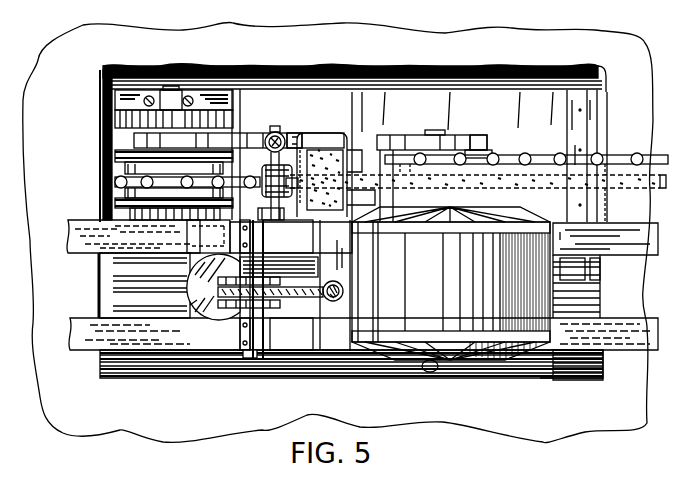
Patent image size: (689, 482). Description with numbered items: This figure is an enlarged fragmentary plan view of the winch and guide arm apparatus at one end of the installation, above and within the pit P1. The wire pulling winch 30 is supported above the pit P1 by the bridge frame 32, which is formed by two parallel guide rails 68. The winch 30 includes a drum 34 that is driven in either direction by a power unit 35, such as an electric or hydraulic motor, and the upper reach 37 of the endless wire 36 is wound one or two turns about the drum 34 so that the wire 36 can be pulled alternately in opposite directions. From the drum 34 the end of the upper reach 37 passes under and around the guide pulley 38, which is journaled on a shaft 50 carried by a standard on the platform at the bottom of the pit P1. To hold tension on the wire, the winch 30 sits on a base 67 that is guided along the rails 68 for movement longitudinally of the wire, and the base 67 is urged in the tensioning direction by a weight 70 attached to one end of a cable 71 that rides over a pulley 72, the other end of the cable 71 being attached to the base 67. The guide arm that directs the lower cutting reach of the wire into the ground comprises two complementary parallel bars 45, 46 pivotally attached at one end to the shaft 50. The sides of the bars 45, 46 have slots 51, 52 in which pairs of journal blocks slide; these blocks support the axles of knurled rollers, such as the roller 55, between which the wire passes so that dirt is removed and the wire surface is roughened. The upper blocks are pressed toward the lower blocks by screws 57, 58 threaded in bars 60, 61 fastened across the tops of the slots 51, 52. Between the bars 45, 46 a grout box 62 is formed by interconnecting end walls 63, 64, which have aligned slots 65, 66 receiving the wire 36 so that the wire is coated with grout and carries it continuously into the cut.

The winch 30 is at (463, 133).
The bridge frame 32 is at (86, 222).
The drum 34 is at (487, 140).
The power unit 35 is at (445, 287).
The endless wire 36 is at (610, 155).
The upper reach 37 is at (554, 156).
The guide pulley 38 is at (115, 168).
The bar 45 is at (235, 133).
The bar 46 is at (186, 226).
The shaft 50 is at (160, 88).
The slot 51 is at (296, 133).
The slot 52 is at (283, 232).
The knurled roller 55 is at (262, 172).
The screw 57 is at (268, 132).
The screw 58 is at (266, 216).
The bar 60 is at (301, 162).
The bar 61 is at (303, 228).
The grout box 62 is at (346, 153).
The end wall 63 is at (306, 152).
The end wall 64 is at (346, 166).
The slot 65 is at (290, 178).
The slot 66 is at (346, 196).
The base 67 is at (512, 276).
The guide rails 68 is at (83, 253).
The weight 70 is at (190, 292).
The cable 71 is at (308, 284).
The pulley 72 is at (268, 327).
The pit P1 is at (525, 378).